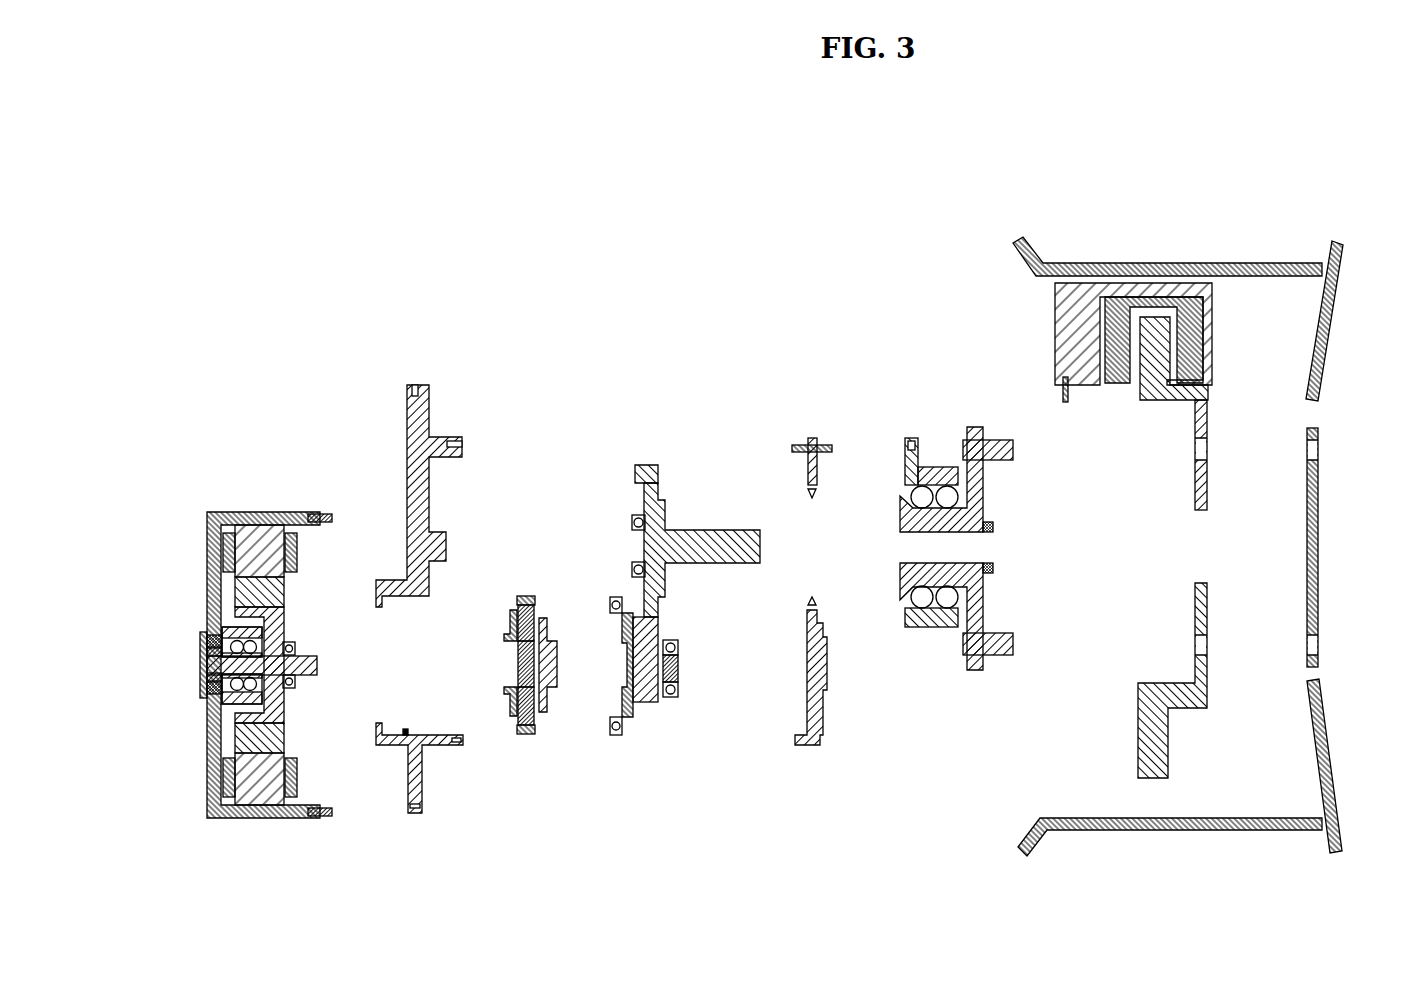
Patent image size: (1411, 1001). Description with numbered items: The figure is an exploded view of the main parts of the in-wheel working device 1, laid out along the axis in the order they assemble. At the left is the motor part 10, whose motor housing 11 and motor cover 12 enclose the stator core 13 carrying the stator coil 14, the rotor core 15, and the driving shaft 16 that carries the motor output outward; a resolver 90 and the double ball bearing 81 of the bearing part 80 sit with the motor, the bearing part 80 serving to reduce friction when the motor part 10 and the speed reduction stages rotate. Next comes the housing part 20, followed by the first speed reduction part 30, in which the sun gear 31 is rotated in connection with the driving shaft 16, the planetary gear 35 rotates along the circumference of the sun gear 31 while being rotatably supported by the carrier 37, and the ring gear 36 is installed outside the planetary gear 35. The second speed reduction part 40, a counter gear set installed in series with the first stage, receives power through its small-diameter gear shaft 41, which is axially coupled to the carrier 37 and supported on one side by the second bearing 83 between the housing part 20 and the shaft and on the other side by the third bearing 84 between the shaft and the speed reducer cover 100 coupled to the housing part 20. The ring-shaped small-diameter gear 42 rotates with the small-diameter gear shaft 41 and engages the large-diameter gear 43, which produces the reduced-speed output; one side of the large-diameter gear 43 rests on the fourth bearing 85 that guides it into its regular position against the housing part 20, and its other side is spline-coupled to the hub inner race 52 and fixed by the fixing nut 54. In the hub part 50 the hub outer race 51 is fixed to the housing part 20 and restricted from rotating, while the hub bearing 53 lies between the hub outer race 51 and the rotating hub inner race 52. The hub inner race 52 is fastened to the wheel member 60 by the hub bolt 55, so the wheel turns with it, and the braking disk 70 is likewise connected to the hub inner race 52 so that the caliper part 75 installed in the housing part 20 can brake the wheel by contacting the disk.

The in-wheel working device 1 is at (1329, 172).
The motor part 10 is at (199, 487).
The motor housing 11 is at (207, 578).
The motor cover 12 is at (201, 654).
The stator core 13 is at (257, 537).
The stator coil 14 is at (306, 550).
The rotor core 15 is at (284, 595).
The driving shaft 16 is at (311, 665).
The housing part 20 is at (437, 794).
The first speed reduction part 30 is at (516, 587).
The sun gear 31 is at (517, 666).
The planetary gear 35 is at (516, 622).
The ring gear 36 is at (529, 595).
The carrier 37 is at (553, 692).
The second speed reduction part 40 is at (645, 420).
The small-diameter gear shaft 41 is at (679, 661).
The small-diameter gear 42 is at (645, 702).
The large-diameter gear 43 is at (658, 469).
The hub part 50 is at (904, 406).
The hub outer race 51 is at (907, 467).
The hub inner race 52 is at (979, 499).
The hub bearing 53 is at (934, 478).
The fixing nut 54 is at (996, 571).
The hub bolt 55 is at (1015, 646).
The wheel member 60 is at (1324, 375).
The braking disk 70 is at (1208, 428).
The caliper part 75 is at (1070, 327).
The bearing part 80 is at (300, 698).
The double ball bearing 81 is at (291, 644).
The second bearing 83 is at (618, 738).
The third bearing 84 is at (675, 698).
The fourth bearing 85 is at (630, 518).
The resolver 90 is at (199, 686).
The speed reducer cover 100 is at (827, 688).